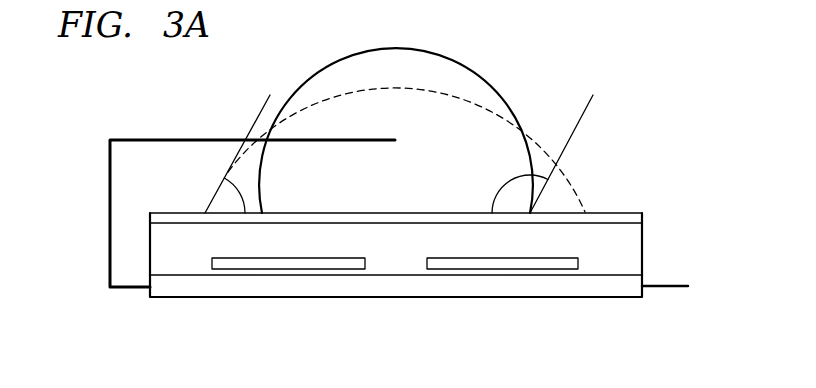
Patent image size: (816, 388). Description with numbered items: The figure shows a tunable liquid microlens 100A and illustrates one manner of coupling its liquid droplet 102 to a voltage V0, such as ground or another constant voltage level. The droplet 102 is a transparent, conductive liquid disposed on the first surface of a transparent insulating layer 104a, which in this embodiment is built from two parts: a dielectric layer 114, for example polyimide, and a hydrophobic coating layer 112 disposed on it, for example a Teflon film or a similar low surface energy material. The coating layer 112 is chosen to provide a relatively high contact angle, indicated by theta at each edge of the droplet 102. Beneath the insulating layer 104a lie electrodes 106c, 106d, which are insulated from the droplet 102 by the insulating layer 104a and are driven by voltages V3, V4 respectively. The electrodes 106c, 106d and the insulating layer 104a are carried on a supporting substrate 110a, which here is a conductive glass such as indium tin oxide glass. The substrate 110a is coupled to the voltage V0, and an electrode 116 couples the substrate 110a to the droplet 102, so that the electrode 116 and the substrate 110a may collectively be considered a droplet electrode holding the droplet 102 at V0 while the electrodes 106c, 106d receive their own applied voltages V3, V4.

The tunable liquid microlens 100A is at (688, 59).
The droplet 102 is at (454, 77).
The insulating layer 104a is at (651, 213).
The electrode 106c is at (277, 267).
The electrode 106d is at (510, 267).
The supporting substrate 110a is at (437, 290).
The hydrophobic coating layer 112 is at (634, 212).
The dielectric layer 114 is at (601, 242).
The electrode 116 is at (110, 216).
The voltage applied to electrode 106c V3 is at (240, 265).
The voltage applied to electrode 106d V4 is at (548, 263).
The voltage Vo V0 is at (679, 292).